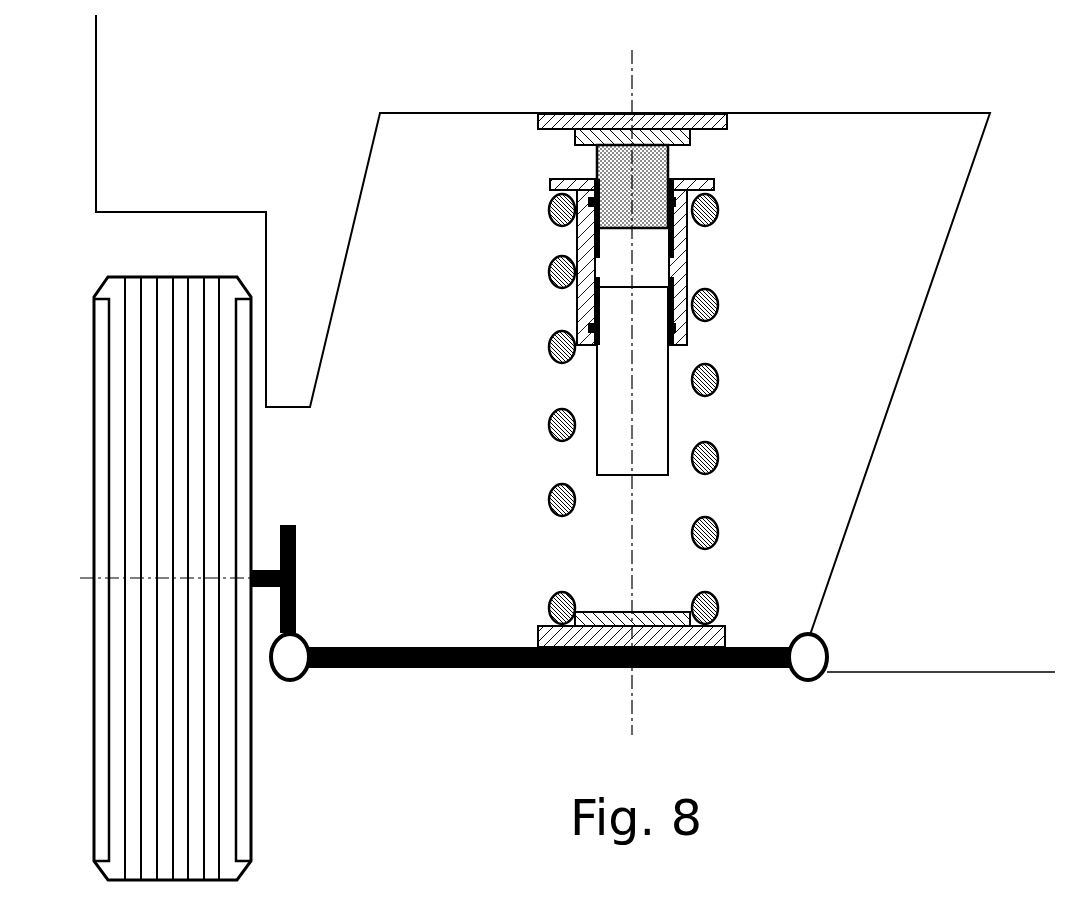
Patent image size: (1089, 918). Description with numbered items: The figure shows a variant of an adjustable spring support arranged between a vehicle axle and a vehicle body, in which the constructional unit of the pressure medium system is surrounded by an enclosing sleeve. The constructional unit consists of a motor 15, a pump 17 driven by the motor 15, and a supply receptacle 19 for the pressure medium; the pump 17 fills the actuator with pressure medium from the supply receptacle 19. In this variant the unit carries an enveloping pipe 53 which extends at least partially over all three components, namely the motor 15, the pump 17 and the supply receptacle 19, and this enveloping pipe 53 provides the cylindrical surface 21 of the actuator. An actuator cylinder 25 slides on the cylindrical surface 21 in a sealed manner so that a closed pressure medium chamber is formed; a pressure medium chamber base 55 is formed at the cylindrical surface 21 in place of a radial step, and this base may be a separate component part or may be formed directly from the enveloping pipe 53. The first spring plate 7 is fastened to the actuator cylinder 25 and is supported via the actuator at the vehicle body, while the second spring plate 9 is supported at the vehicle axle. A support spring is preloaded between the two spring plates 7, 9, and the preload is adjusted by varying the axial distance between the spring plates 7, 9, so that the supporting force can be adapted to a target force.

The first spring plate 7 is at (718, 183).
The second spring plate 9 is at (723, 640).
The motor 15 is at (648, 424).
The pump 17 is at (643, 253).
The supply receptacle 19 is at (643, 172).
The cylindrical surface 21 is at (593, 157).
The actuator cylinder 25 is at (583, 311).
The enveloping pipe 53 is at (593, 167).
The pressure medium chamber base 55 is at (712, 207).